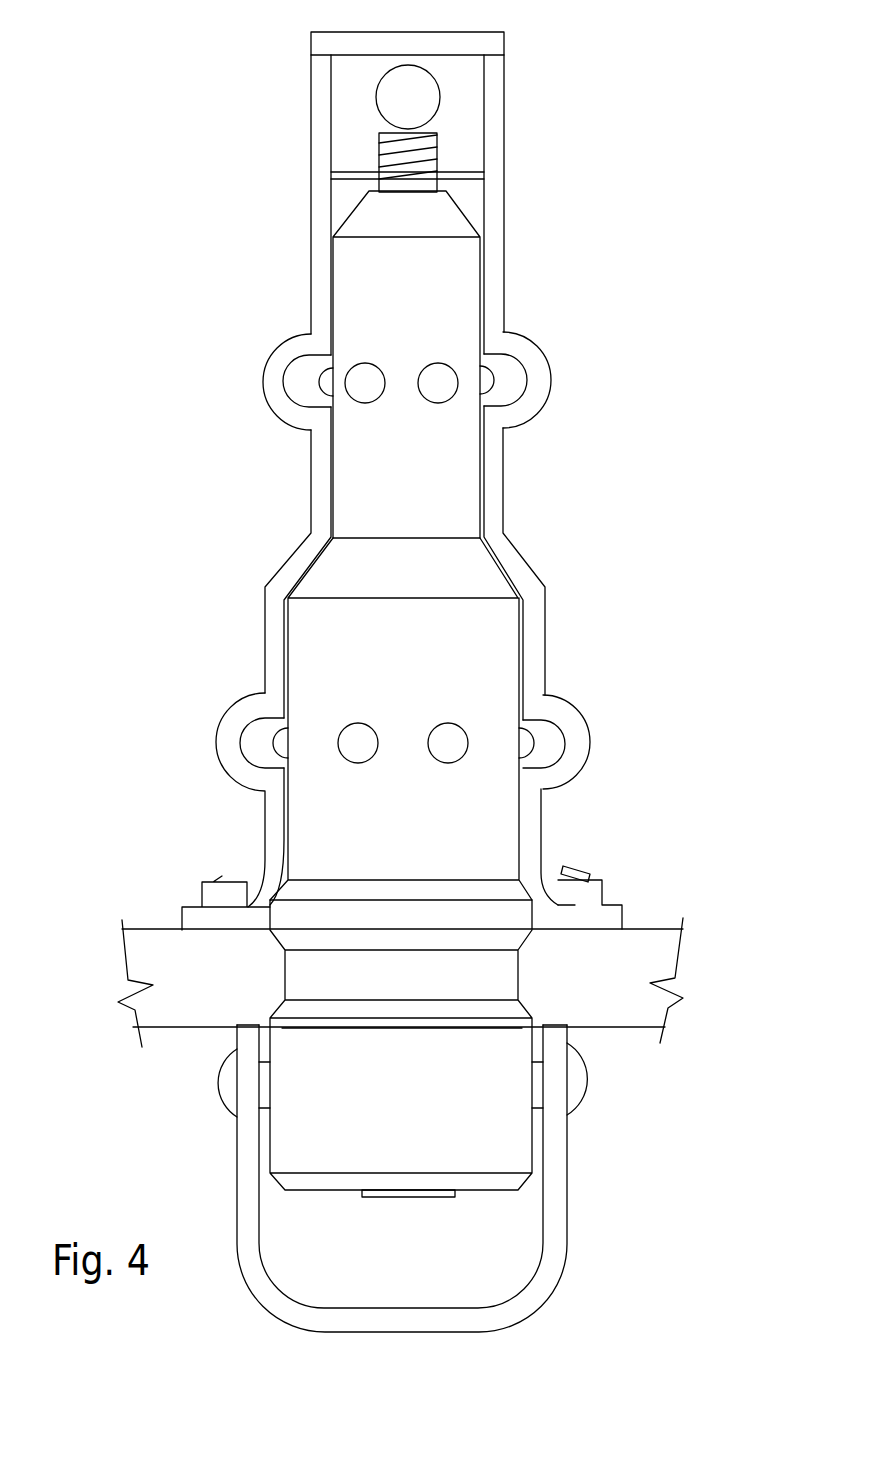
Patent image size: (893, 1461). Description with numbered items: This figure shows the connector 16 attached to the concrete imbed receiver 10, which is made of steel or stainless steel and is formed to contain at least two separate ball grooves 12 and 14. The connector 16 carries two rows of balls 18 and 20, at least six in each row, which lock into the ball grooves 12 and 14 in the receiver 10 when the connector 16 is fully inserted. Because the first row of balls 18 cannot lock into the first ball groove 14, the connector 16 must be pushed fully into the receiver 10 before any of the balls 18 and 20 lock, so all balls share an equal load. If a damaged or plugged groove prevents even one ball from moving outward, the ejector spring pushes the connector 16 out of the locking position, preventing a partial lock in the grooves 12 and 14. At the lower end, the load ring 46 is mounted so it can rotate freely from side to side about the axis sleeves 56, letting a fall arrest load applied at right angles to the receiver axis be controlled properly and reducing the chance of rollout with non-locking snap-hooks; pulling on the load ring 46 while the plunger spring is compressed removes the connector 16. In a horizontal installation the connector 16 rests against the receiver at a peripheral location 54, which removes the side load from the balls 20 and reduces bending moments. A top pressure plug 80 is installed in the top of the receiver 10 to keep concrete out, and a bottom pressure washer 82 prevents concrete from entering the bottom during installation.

The concrete imbed receiver 10 is at (503, 273).
The ball groove 12 is at (551, 386).
The ball groove 14 is at (590, 770).
The connector 16 is at (483, 302).
The balls 18 is at (490, 368).
The balls 20 is at (535, 740).
The load ring 46 is at (568, 1250).
The peripheral location 54 is at (523, 893).
The axis sleeves 56 is at (587, 1105).
The top pressure plug 80 is at (458, 28).
The bottom pressure washer 82 is at (440, 97).